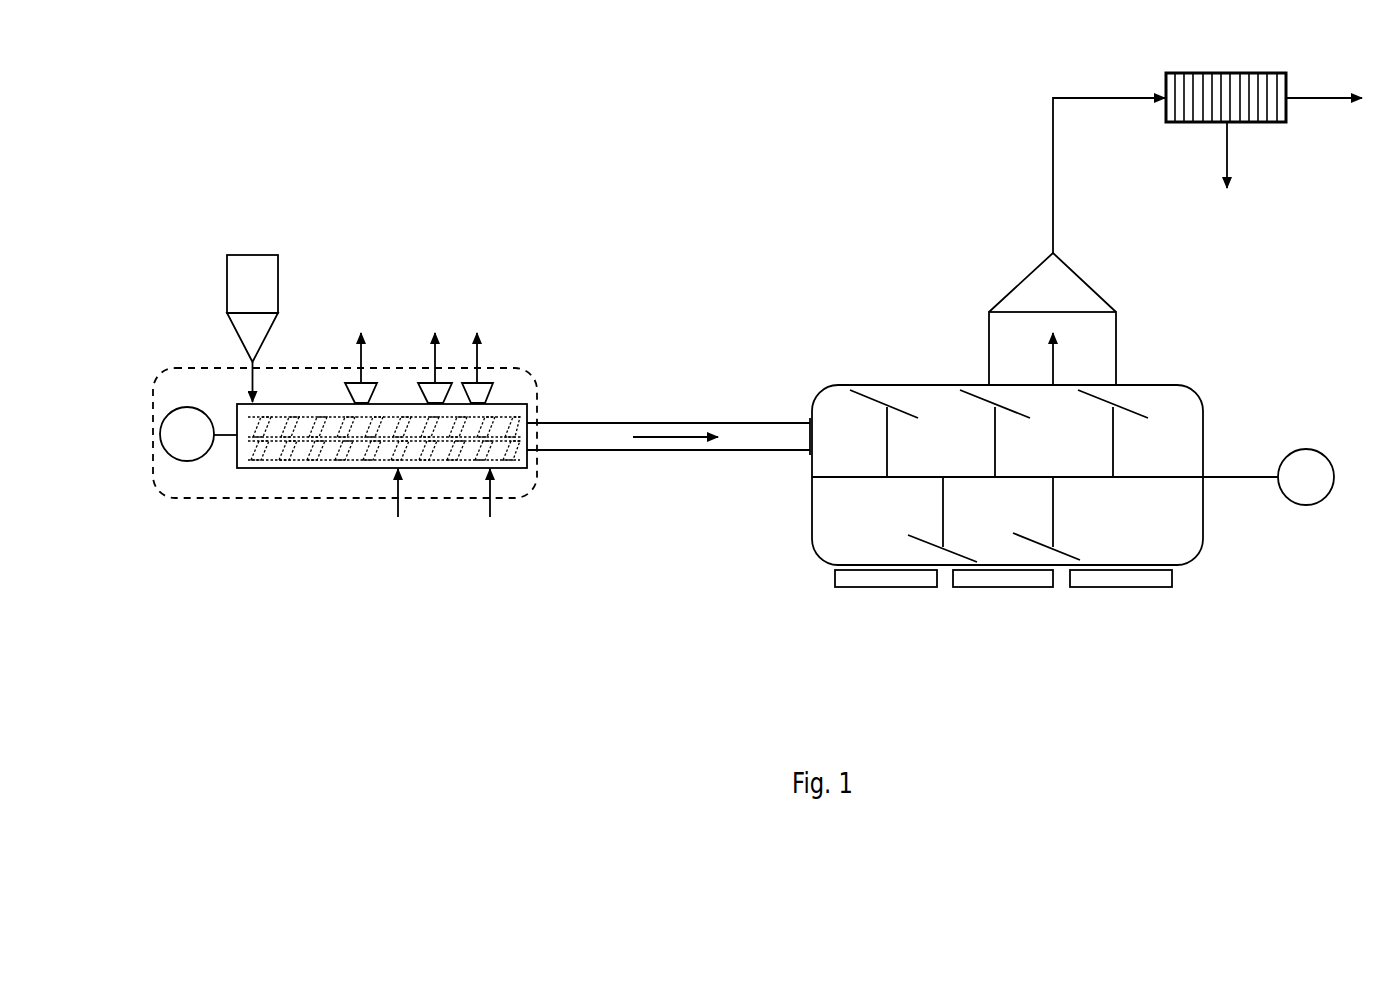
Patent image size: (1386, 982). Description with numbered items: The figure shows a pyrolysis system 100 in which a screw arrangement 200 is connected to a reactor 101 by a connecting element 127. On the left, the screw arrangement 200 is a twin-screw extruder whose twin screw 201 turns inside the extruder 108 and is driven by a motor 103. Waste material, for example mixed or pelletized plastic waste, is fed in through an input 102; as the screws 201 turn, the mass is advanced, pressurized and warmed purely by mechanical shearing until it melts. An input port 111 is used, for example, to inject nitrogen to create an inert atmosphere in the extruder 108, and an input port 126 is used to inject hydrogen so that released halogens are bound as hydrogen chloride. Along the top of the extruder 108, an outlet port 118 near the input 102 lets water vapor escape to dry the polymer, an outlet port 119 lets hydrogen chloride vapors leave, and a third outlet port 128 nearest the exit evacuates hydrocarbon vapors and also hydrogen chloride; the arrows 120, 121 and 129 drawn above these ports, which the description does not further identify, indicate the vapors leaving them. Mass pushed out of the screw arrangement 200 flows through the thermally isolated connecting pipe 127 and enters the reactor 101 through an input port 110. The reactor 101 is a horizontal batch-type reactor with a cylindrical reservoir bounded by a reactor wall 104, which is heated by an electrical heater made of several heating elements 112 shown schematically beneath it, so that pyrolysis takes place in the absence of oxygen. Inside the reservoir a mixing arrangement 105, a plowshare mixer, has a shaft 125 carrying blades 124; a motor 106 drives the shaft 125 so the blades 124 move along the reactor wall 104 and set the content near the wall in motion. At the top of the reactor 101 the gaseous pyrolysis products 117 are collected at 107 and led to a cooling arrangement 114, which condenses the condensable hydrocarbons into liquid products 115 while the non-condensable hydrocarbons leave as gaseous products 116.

The system 100 is at (213, 133).
The reactor 101 is at (1205, 437).
The input 102 is at (260, 258).
The motor 103 is at (188, 463).
The reactor wall 104 is at (1143, 563).
The mixing arrangement 105 is at (1127, 462).
The motor 106 is at (1298, 506).
The gas collection at reactor top 107 is at (1006, 293).
The extruder 108 is at (258, 470).
The input port 110 is at (810, 423).
The input port 111 is at (492, 505).
The heating elements 112 is at (878, 590).
The cooling arrangement 114 is at (1173, 123).
The liquid products 115 is at (1229, 168).
The gaseous products 116 is at (1313, 99).
The gaseous pyrolysis products 117 is at (1052, 172).
The outlet port 118 is at (348, 387).
The outlet port 119 is at (425, 387).
The first vent 120 is at (358, 358).
The second vent 121 is at (438, 355).
The blades 124 is at (1052, 548).
The shaft 125 is at (843, 478).
The input port 126 is at (402, 503).
The connecting element 127 is at (683, 451).
The third outlet port 128 is at (487, 400).
The third vent 129 is at (483, 360).
The screw arrangement 200 is at (152, 414).
The twin screw 201 is at (307, 458).